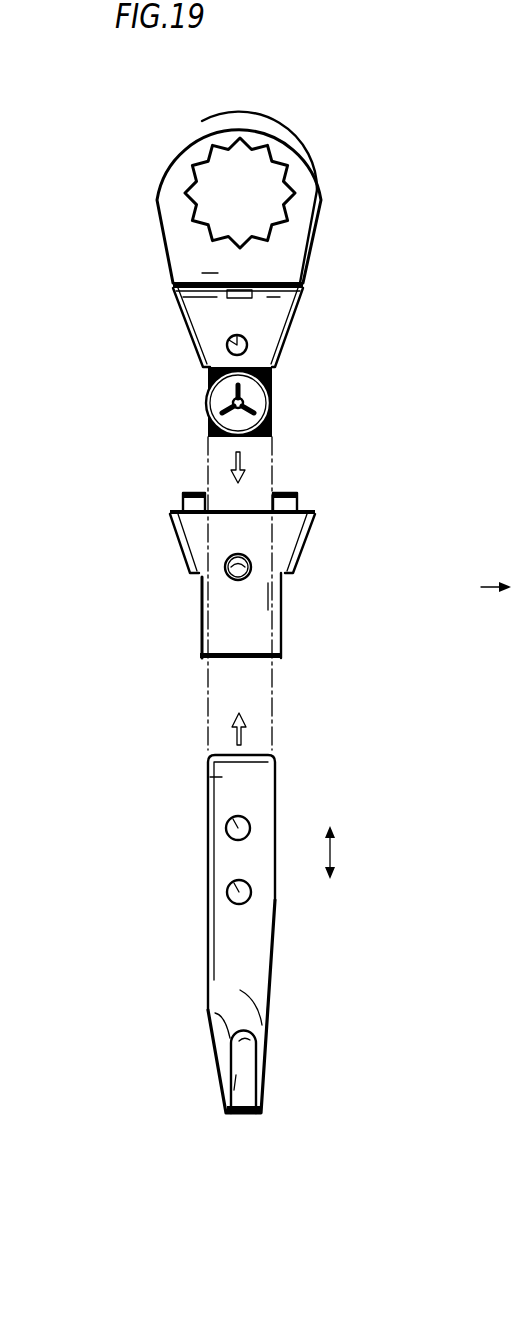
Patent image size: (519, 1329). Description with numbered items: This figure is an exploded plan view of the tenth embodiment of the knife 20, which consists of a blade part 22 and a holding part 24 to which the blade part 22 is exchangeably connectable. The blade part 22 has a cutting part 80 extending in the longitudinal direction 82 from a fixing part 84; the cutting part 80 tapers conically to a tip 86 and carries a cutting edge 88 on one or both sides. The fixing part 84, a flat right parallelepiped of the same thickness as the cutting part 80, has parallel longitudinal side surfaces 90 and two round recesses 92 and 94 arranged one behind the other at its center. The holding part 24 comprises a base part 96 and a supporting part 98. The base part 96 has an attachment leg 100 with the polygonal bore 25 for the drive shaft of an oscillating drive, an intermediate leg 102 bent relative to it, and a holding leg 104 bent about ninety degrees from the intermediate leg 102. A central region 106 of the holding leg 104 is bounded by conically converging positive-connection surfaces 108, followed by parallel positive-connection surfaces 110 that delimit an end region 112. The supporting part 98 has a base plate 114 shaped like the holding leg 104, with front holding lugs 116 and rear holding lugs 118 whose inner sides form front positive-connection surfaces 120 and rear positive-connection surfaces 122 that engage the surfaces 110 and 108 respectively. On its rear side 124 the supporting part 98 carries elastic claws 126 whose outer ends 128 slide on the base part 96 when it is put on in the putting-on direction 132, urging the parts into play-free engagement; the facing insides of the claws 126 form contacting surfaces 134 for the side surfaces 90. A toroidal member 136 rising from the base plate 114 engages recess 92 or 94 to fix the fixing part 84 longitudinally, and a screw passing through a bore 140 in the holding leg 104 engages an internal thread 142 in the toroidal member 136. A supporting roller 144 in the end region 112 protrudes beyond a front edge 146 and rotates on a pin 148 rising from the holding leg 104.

The knife 20 is at (444, 100).
The blade part 22 is at (211, 914).
The holding part 24 is at (148, 250).
The polygonal bore 25 is at (196, 178).
The cutting part 80 is at (267, 1043).
The longitudinal direction 82 is at (333, 852).
The fixing part 84 is at (207, 777).
The tip 86 is at (247, 1047).
The cutting edge 88 is at (207, 1013).
The longitudinal side surfaces 90 is at (207, 818).
The round recess 92 is at (250, 832).
The round recess 94 is at (250, 893).
The base part 96 is at (340, 187).
The supporting part 98 is at (167, 550).
The attachment leg 100 is at (295, 220).
The intermediate leg 102 is at (293, 302).
The holding leg 104 is at (207, 384).
The central region 106 is at (287, 340).
The positive-connection surfaces 108 is at (185, 313).
The positive-connection surfaces 110 is at (273, 398).
The end region 112 is at (215, 431).
The base plate 114 is at (282, 533).
The front holding lugs 116 is at (282, 628).
The rear holding lugs 118 is at (278, 562).
The front positive-connection surfaces 120 is at (218, 640).
The rear positive-connection surfaces 122 is at (187, 560).
The rear side 124 is at (208, 478).
The claws 126 is at (197, 493).
The outer ends 128 is at (297, 507).
The putting-on direction 132 is at (481, 585).
The contacting surfaces 134 is at (273, 478).
The toroidal member 136 is at (280, 597).
The bore 140 is at (237, 335).
The internal thread 142 is at (226, 570).
The supporting roller 144 is at (275, 407).
The front edge 146 is at (204, 447).
The pin 148 is at (270, 383).